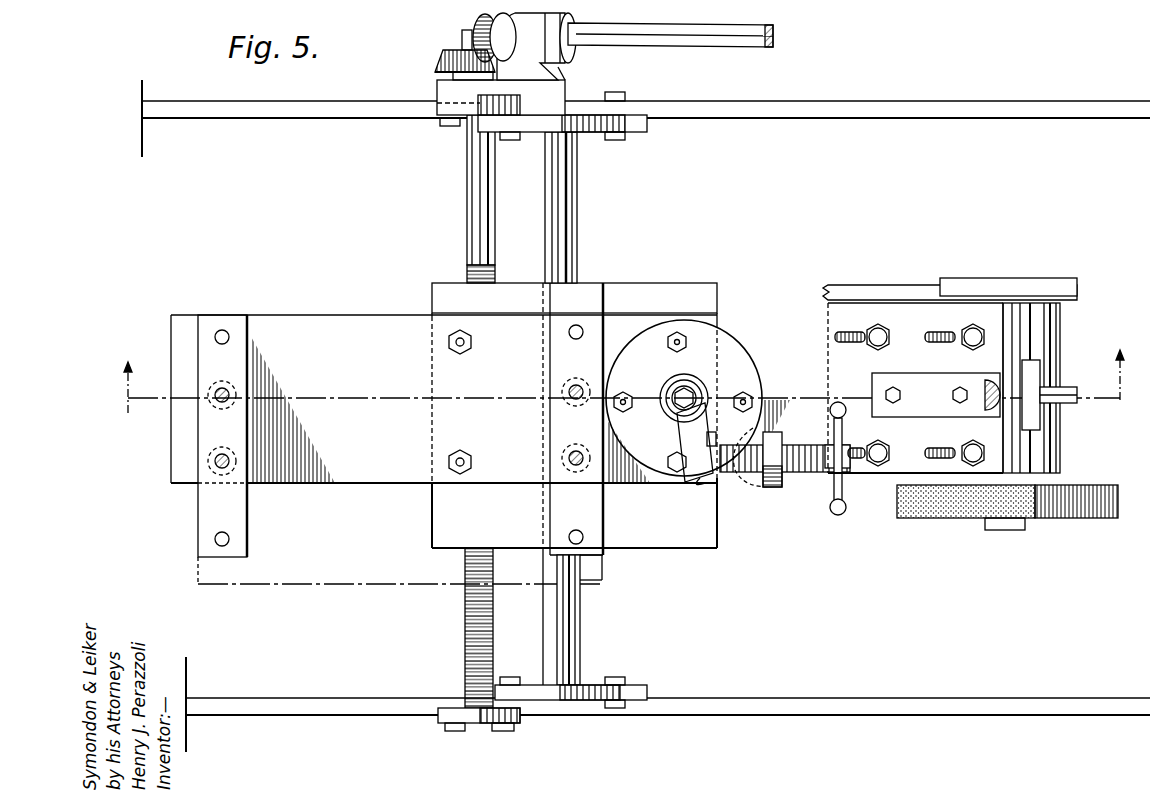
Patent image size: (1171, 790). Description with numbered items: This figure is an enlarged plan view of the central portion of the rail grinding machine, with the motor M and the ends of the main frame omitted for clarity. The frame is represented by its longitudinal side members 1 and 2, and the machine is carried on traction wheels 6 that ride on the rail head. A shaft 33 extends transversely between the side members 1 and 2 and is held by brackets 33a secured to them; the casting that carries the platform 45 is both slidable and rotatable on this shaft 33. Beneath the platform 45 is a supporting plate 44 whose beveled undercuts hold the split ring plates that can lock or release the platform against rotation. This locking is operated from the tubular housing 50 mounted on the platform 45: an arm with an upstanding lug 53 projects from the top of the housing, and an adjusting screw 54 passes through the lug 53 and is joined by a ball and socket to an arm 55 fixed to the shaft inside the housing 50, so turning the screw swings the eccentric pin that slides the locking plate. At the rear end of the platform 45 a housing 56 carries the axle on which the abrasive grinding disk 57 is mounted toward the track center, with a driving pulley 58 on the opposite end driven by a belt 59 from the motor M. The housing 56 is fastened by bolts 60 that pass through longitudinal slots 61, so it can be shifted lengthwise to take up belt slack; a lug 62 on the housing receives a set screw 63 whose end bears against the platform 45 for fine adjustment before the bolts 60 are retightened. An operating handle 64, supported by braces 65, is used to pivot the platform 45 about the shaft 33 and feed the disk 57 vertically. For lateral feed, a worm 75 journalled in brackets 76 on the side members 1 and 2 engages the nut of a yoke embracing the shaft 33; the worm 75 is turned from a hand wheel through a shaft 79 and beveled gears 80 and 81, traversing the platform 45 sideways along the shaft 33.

The longitudinal side member 1 is at (866, 706).
The longitudinal side member 2 is at (816, 101).
The traction wheels 6 is at (624, 393).
The motor M is at (336, 586).
The shaft 33 is at (567, 630).
The brackets 33a is at (590, 132).
The supporting plate 44 is at (705, 538).
The platform 45 is at (444, 436).
The tubular housing 50 is at (686, 384).
The lug 53 is at (775, 488).
The adjusting screw 54 is at (765, 488).
The arm 55 is at (704, 476).
The housing 56 is at (686, 438).
The grinding disk 57 is at (1055, 520).
The driving pulley 58 is at (1052, 280).
The belt 59 is at (880, 285).
The bolts 60 is at (882, 337).
The longitudinal slots 61 is at (835, 336).
The lug 62 is at (1034, 378).
The set screw 63 is at (1058, 404).
The operating handle 64 is at (978, 388).
The braces 65 is at (1060, 336).
The worm 75 is at (468, 274).
The brackets 76 is at (465, 103).
The shaft 79 is at (700, 42).
The beveled gear 80 is at (452, 57).
The beveled gear 81 is at (482, 26).